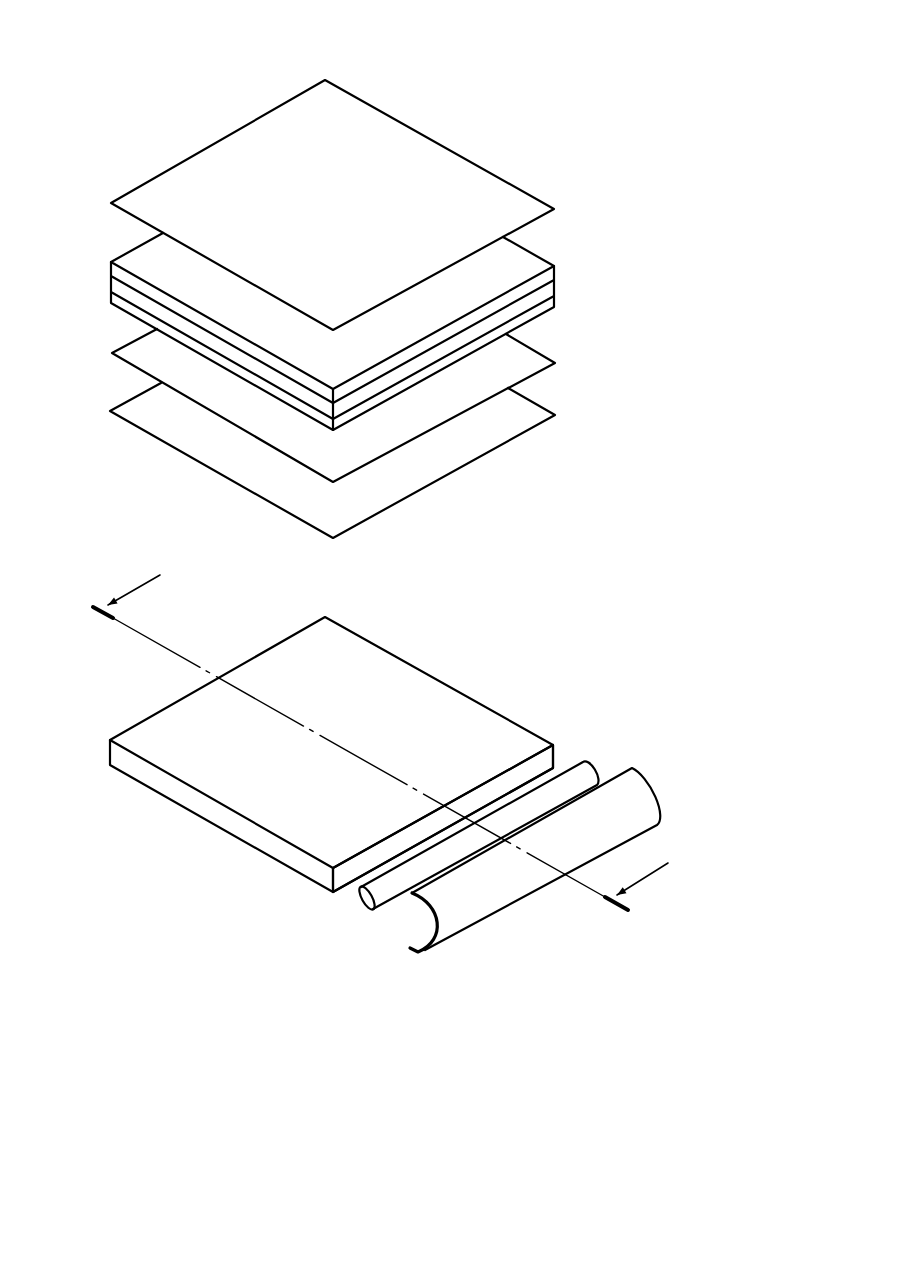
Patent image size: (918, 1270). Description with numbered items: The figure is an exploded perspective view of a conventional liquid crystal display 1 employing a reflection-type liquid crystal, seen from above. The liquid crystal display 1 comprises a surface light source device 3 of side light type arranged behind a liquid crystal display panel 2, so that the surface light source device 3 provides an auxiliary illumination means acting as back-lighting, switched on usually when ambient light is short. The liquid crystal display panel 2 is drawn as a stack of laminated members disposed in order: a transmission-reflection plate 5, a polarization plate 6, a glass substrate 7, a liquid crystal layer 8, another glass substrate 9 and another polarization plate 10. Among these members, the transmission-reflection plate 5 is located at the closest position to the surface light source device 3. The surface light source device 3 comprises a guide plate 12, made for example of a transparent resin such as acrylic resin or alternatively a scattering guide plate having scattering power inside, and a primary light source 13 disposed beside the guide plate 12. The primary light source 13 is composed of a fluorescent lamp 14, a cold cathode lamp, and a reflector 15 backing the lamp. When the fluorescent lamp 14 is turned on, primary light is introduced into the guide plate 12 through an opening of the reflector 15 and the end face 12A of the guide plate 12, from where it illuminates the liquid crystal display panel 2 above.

The liquid crystal display 1 is at (87, 1037).
The liquid crystal display panel 2 is at (105, 93).
The surface light source device 3 is at (117, 920).
The transmission-reflection plate 5 is at (525, 419).
The polarization plate 6 is at (525, 363).
The glass substrate 7 is at (540, 315).
The liquid crystal layer 8 is at (530, 300).
The glass substrate 9 is at (513, 267).
The polarization plate 10 is at (513, 213).
The guide plate 12 is at (328, 640).
The end face 12A is at (540, 763).
The primary light source 13 is at (575, 922).
The fluorescent lamp 14 is at (357, 896).
The reflector 15 is at (516, 882).